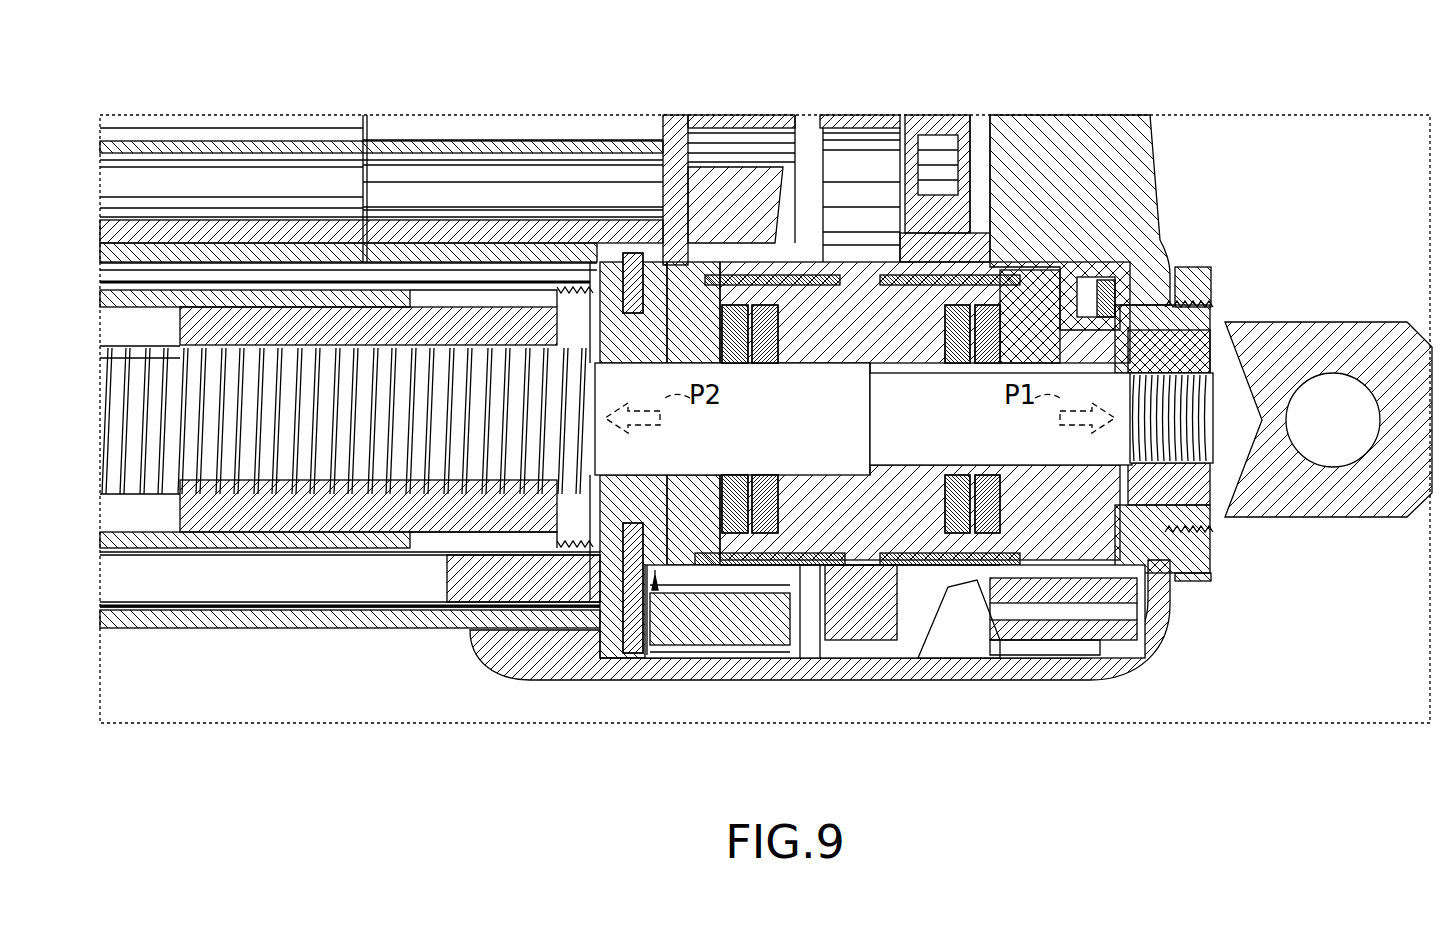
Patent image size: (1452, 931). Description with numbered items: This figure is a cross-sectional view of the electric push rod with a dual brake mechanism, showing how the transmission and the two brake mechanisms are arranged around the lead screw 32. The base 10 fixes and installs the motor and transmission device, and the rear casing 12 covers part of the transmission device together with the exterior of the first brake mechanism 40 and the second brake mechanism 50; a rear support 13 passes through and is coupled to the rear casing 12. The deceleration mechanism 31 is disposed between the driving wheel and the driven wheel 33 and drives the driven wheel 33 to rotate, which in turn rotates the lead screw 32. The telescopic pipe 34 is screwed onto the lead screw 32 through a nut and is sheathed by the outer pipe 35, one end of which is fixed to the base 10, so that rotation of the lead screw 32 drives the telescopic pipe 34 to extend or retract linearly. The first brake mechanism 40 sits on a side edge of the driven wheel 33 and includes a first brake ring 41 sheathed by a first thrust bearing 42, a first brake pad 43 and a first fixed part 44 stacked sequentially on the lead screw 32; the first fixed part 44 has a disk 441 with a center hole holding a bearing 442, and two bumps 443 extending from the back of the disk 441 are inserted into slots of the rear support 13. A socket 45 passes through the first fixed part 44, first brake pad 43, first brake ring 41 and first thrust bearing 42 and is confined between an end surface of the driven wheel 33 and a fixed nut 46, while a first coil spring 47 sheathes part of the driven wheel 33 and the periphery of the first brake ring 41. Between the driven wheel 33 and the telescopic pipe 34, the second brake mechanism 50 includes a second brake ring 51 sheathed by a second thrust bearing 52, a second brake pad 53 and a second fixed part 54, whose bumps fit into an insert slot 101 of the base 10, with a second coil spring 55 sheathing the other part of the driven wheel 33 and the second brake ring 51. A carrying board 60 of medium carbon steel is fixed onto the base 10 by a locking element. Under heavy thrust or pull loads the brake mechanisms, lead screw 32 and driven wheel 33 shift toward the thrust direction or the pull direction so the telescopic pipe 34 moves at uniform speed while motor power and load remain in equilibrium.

The base 10 is at (820, 525).
The insert slot 101 is at (562, 663).
The rear casing 12 is at (1140, 178).
The rear support 13 is at (1330, 333).
The deceleration mechanism 31 is at (977, 135).
The lead screw 32 is at (742, 595).
The driven wheel 33 is at (863, 620).
The telescopic pipe 34 is at (272, 543).
The outer pipe 35 is at (195, 618).
The first brake mechanism 40 is at (953, 583).
The first brake ring 41 is at (1010, 300).
The first thrust bearing 42 is at (945, 240).
The first brake pad 43 is at (1045, 310).
The first fixed part 44 is at (1068, 563).
The disk 441 is at (1090, 290).
The bearing 442 is at (1172, 308).
The bumps 443 is at (1165, 300).
The socket 45 is at (1157, 605).
The fixed nut 46 is at (1213, 557).
The first coil spring 47 is at (965, 567).
The second brake mechanism 50 is at (697, 457).
The second brake ring 51 is at (700, 290).
The second thrust bearing 52 is at (760, 300).
The second brake pad 53 is at (655, 250).
The second fixed part 54 is at (655, 595).
The second coil spring 55 is at (828, 660).
The carrying board 60 is at (633, 627).